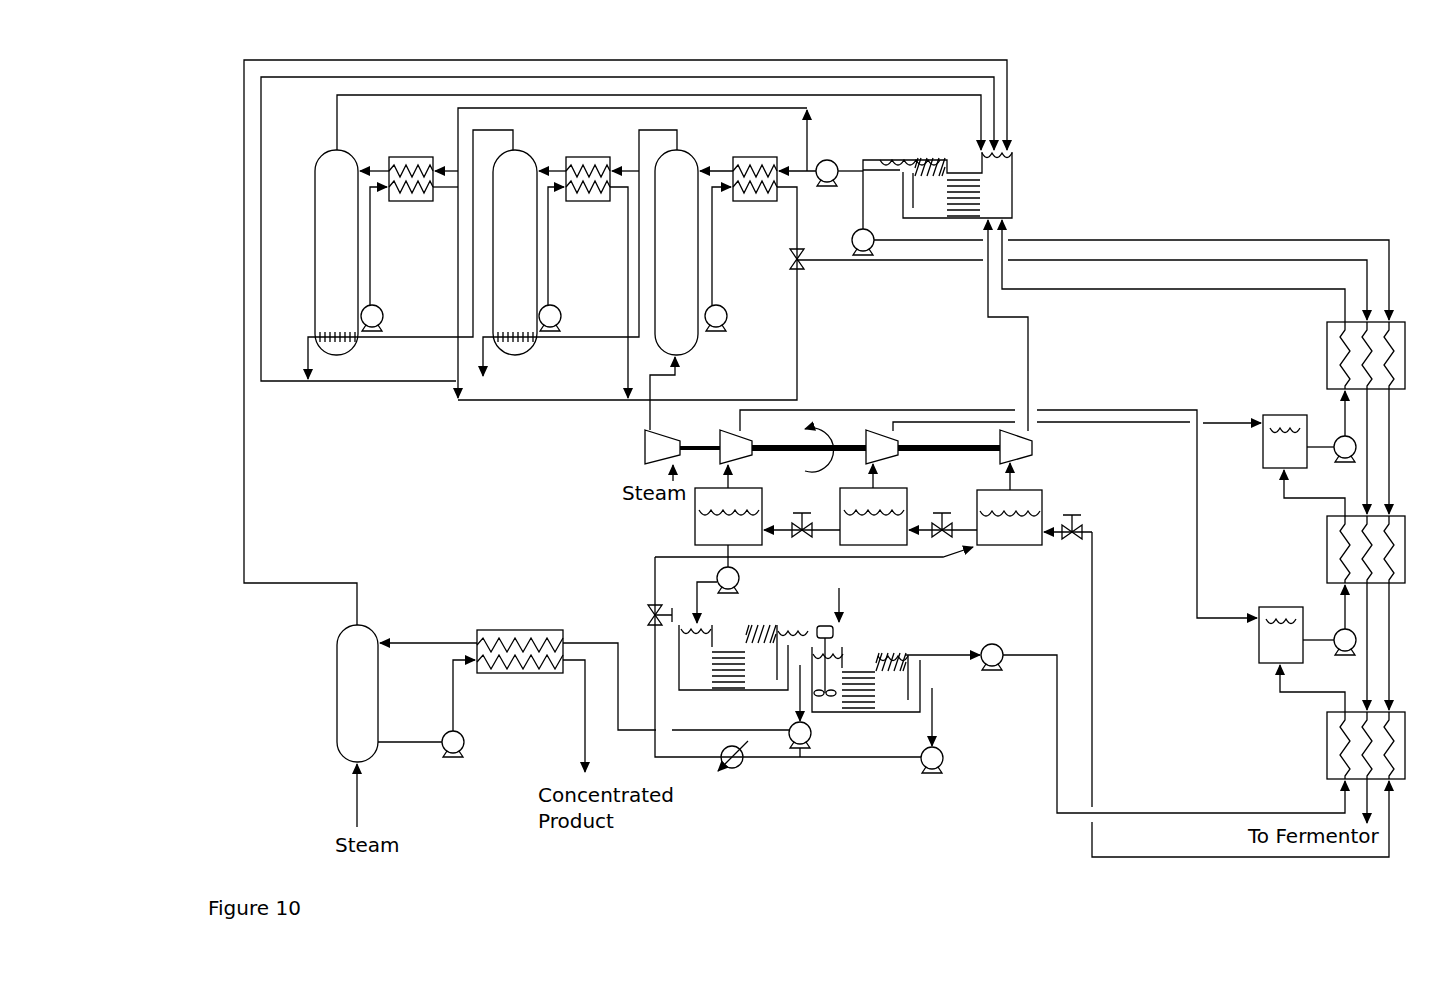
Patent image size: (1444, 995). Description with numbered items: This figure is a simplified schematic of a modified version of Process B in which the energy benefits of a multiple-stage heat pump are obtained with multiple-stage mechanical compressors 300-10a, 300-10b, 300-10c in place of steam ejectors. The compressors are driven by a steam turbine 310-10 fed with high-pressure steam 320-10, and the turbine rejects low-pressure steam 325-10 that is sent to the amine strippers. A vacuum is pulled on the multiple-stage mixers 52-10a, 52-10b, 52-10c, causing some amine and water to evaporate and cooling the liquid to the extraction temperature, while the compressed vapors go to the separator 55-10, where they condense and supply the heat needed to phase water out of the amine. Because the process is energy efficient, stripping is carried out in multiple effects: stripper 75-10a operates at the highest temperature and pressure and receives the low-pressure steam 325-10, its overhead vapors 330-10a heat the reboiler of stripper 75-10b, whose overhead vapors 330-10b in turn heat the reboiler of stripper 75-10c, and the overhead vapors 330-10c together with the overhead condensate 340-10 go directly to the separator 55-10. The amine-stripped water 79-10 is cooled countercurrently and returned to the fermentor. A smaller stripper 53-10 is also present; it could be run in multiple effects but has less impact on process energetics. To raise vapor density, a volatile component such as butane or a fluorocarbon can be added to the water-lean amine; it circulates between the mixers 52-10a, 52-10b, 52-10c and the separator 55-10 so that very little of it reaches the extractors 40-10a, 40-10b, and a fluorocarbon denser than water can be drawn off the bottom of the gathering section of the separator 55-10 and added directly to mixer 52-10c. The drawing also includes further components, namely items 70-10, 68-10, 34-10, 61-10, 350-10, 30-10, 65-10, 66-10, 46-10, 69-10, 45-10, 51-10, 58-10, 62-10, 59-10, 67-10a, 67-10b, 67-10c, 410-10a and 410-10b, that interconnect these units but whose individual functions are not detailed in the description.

The overhead vapors 330-10c is at (337, 138).
The overhead vapors 330-10b is at (513, 138).
The overhead vapors 330-10a is at (677, 138).
The amine stripper 75-10c is at (336, 252).
The amine stripper 75-10b is at (515, 252).
The amine stripper 75-10a is at (676, 252).
The heat exchanger 70-10 is at (391, 203).
The amine-stripped water 79-10 is at (370, 300).
The overhead condensate 340-10 is at (353, 383).
The low-pressure steam 325-10 is at (685, 372).
The pump 68-10 is at (846, 170).
The separator 55-10 is at (1024, 148).
The pump / line 34-10 is at (862, 193).
The steam turbine 310-10 is at (645, 445).
The high-pressure steam 320-10 is at (673, 480).
The mechanical compressor 300-10a is at (755, 457).
The mechanical compressor 300-10b is at (887, 461).
The mechanical compressor 300-10c is at (1025, 453).
The mixer 52-10a is at (767, 516).
The mixer 52-10b is at (908, 504).
The mixer 52-10c is at (1034, 504).
The valve line 61-10 is at (655, 583).
The pump 350-10 is at (700, 606).
The extractor 40-10a is at (690, 690).
The extractor 40-10b is at (820, 712).
The feed stream 30-10 is at (839, 590).
The pump 65-10 is at (965, 648).
The outlet line 66-10 is at (987, 668).
The pump 46-10 is at (800, 760).
The line 69-10 is at (936, 690).
The flow meter 45-10 is at (732, 770).
The line to column 51-10 is at (605, 640).
The heat exchanger 58-10 is at (492, 675).
The stripper 53-10 is at (337, 743).
The concentrated product line 62-10 is at (582, 705).
The steam inlet 59-10 is at (357, 812).
The heat exchanger a 67-10a is at (1327, 352).
The heat exchanger b 67-10b is at (1327, 568).
The heat exchanger c 67-10c is at (1327, 718).
The tank b 410-10b is at (1263, 455).
The tank a 410-10a is at (1259, 638).